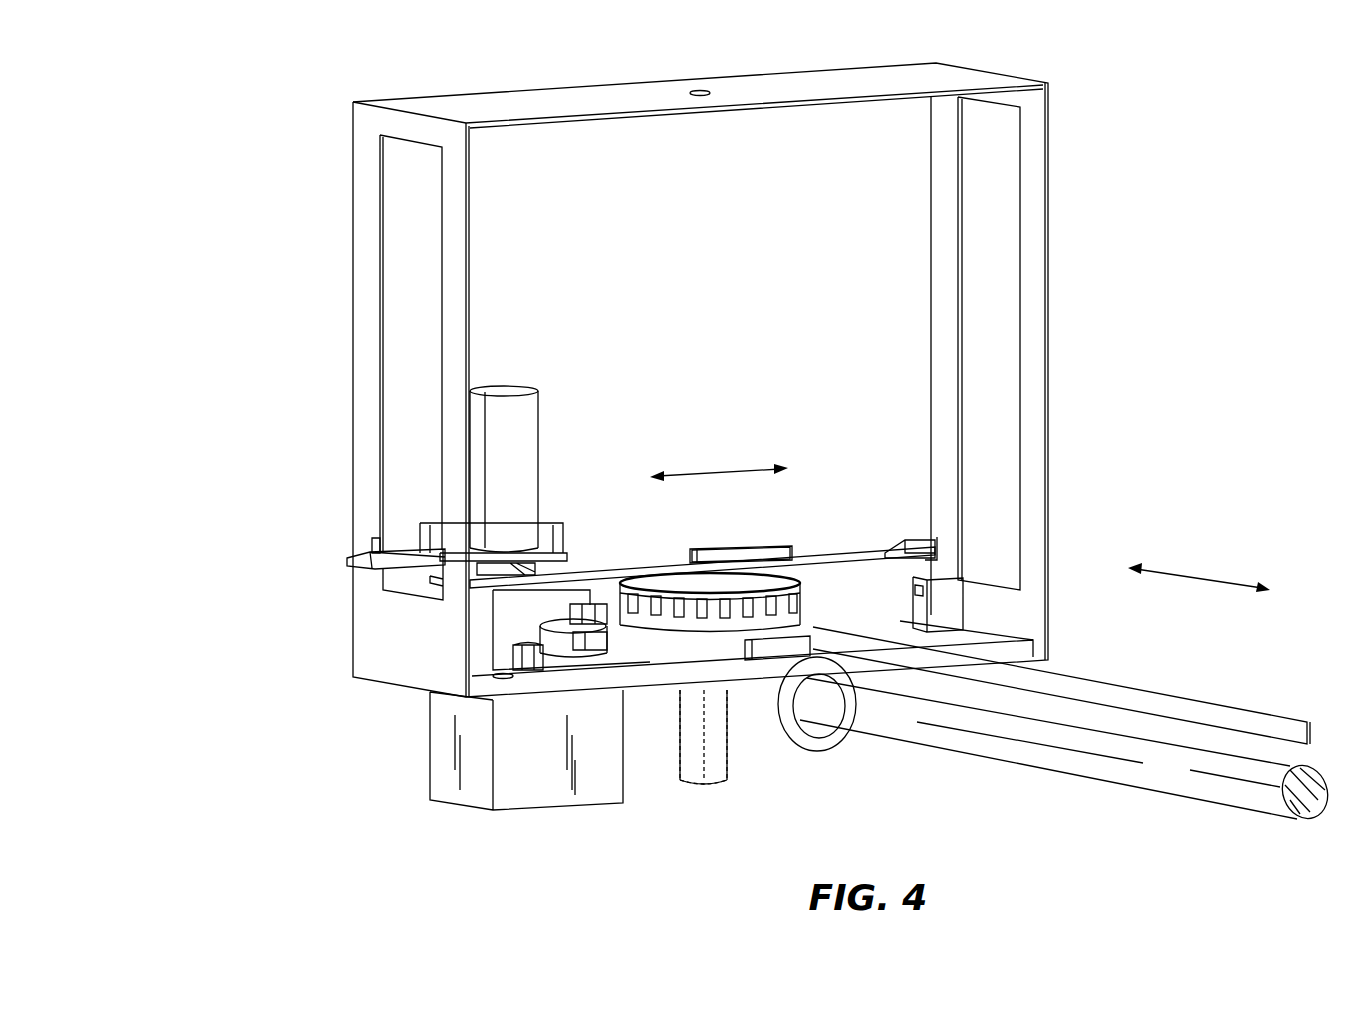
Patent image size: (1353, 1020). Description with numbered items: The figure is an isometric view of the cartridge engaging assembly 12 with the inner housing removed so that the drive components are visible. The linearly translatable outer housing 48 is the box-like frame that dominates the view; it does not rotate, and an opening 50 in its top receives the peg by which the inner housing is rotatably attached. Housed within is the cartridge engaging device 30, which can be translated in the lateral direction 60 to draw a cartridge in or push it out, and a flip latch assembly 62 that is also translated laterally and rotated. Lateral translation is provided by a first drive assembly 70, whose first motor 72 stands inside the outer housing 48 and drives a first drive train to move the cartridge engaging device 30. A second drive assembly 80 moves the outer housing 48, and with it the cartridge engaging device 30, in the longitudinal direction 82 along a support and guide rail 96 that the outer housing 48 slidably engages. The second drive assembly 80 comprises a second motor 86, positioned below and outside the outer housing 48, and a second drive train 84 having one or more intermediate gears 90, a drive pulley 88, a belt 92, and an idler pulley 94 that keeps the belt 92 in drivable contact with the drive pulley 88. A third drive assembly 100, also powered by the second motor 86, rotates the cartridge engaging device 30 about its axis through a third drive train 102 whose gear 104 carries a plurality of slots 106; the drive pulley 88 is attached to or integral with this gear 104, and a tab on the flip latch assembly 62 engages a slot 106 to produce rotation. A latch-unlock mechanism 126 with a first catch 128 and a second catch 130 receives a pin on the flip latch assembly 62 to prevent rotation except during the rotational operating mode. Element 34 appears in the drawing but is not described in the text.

The cartridge engaging assembly 12 is at (224, 112).
The cartridge engaging device 30 is at (415, 462).
The arm tip 34 is at (354, 550).
The outer housing 48 is at (353, 215).
The opening 50 is at (705, 88).
The lateral direction 60 is at (720, 470).
The flip latch assembly 62 is at (611, 540).
The first drive assembly 70 is at (500, 362).
The first motor 72 is at (540, 429).
The second drive assembly 80 is at (818, 604).
The longitudinal direction 82 is at (1201, 573).
The second drive train 84 is at (820, 600).
The second motor 86 is at (430, 744).
The drive pulley 88 is at (717, 640).
The intermediate gears 90 is at (518, 629).
The belt 92 is at (1188, 698).
The idler pulley 94 is at (793, 642).
The support and guide rail 96 is at (1057, 769).
The third drive assembly 100 is at (828, 595).
The third drive train 102 is at (741, 554).
The gear 104 is at (668, 618).
The slots 106 is at (678, 578).
The latch-unlock mechanism 126 is at (966, 546).
The first catch 128 is at (478, 647).
The second catch 130 is at (954, 596).